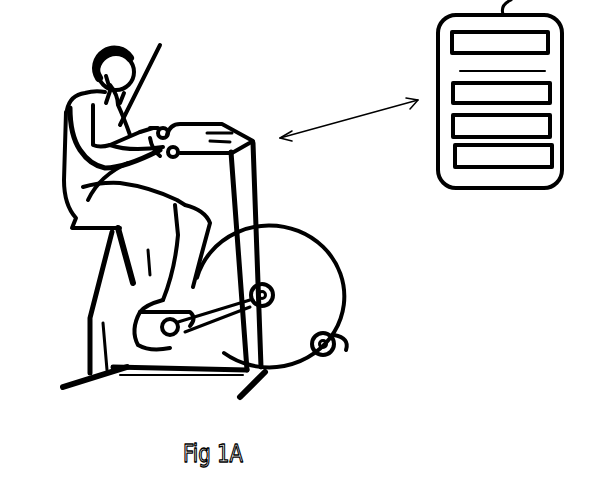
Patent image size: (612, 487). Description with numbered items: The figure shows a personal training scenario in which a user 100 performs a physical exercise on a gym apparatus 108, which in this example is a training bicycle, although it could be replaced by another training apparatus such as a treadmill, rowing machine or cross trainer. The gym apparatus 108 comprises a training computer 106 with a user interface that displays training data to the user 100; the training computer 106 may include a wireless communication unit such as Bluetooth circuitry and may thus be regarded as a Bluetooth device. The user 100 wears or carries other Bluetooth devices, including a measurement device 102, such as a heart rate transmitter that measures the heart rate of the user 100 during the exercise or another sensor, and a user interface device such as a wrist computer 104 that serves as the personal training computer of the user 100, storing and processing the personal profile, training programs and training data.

The user 100 is at (77, 98).
The measurement device 102 is at (160, 45).
The wrist computer 104 is at (161, 130).
The training computer 106 is at (253, 138).
The gym apparatus 108 is at (90, 320).